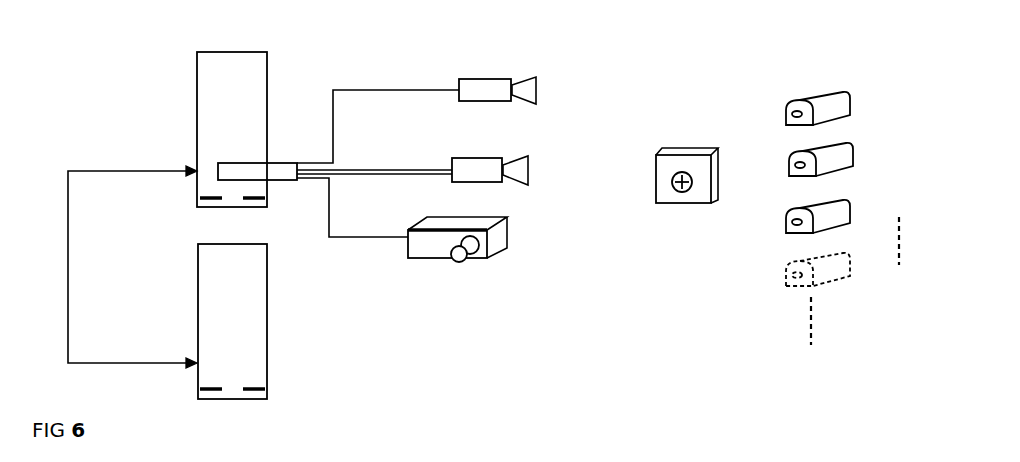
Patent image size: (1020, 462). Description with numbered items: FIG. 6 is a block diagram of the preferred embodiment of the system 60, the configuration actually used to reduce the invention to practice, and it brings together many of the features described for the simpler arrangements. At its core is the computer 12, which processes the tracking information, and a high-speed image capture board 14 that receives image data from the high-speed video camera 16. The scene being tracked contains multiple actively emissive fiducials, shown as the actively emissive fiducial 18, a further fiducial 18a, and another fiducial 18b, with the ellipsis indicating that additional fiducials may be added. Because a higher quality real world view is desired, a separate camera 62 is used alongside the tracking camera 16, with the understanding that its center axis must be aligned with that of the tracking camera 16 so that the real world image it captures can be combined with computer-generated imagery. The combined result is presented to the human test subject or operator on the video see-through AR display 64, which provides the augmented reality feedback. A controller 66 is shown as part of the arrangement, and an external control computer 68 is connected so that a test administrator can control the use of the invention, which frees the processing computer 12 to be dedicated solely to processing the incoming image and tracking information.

The computer 12 is at (260, 50).
The high-speed image capture board 14 is at (274, 159).
The high-speed video camera 16 is at (500, 80).
The system 60 is at (386, 57).
The camera 62 is at (534, 166).
The video see-through AR display 64 is at (512, 235).
The controller 66 is at (687, 144).
The external control computer 68 is at (272, 267).
The actively emissive fiducial 18 is at (851, 98).
The fiducial 18a is at (857, 165).
The fiducial 18b is at (857, 216).